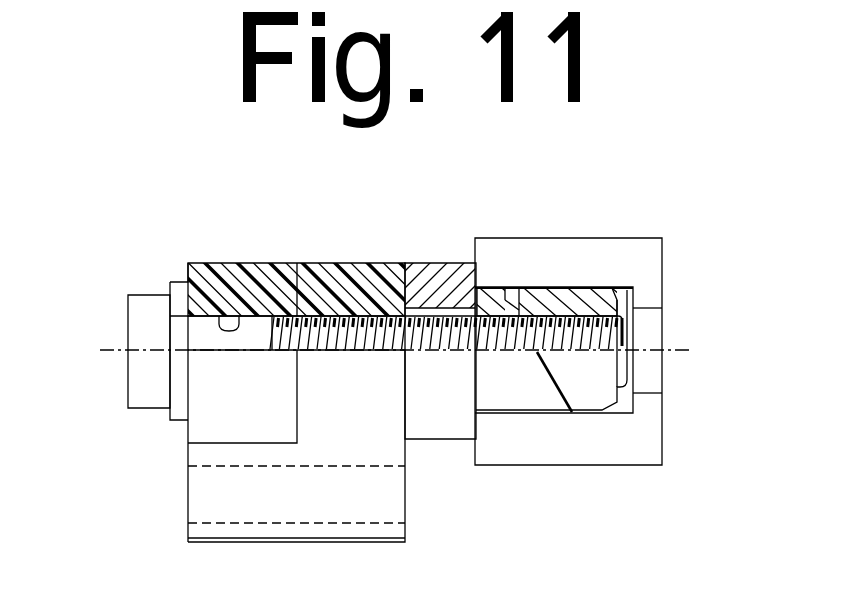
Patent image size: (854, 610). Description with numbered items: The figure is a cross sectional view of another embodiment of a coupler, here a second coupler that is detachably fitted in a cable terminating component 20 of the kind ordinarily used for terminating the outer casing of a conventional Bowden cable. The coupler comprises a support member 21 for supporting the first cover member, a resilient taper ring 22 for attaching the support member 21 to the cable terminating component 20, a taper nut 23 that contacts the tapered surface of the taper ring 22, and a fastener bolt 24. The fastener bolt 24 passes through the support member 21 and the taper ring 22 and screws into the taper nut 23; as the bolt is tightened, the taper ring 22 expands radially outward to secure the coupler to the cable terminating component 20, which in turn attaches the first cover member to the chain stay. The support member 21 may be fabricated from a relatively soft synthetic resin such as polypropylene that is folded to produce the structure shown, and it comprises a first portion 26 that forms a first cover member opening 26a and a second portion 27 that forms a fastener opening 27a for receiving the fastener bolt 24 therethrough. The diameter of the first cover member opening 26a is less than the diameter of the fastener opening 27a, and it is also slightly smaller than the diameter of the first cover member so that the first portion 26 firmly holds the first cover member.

The cable terminating component 20 is at (636, 253).
The support member 21 is at (348, 276).
The resilient taper ring 22 is at (425, 280).
The taper nut 23 is at (574, 303).
The fastener bolt 24 is at (144, 310).
The first portion 26 is at (162, 516).
The first cover member opening 26a is at (383, 516).
The second portion 27 is at (176, 431).
The fastener opening 27a is at (222, 312).